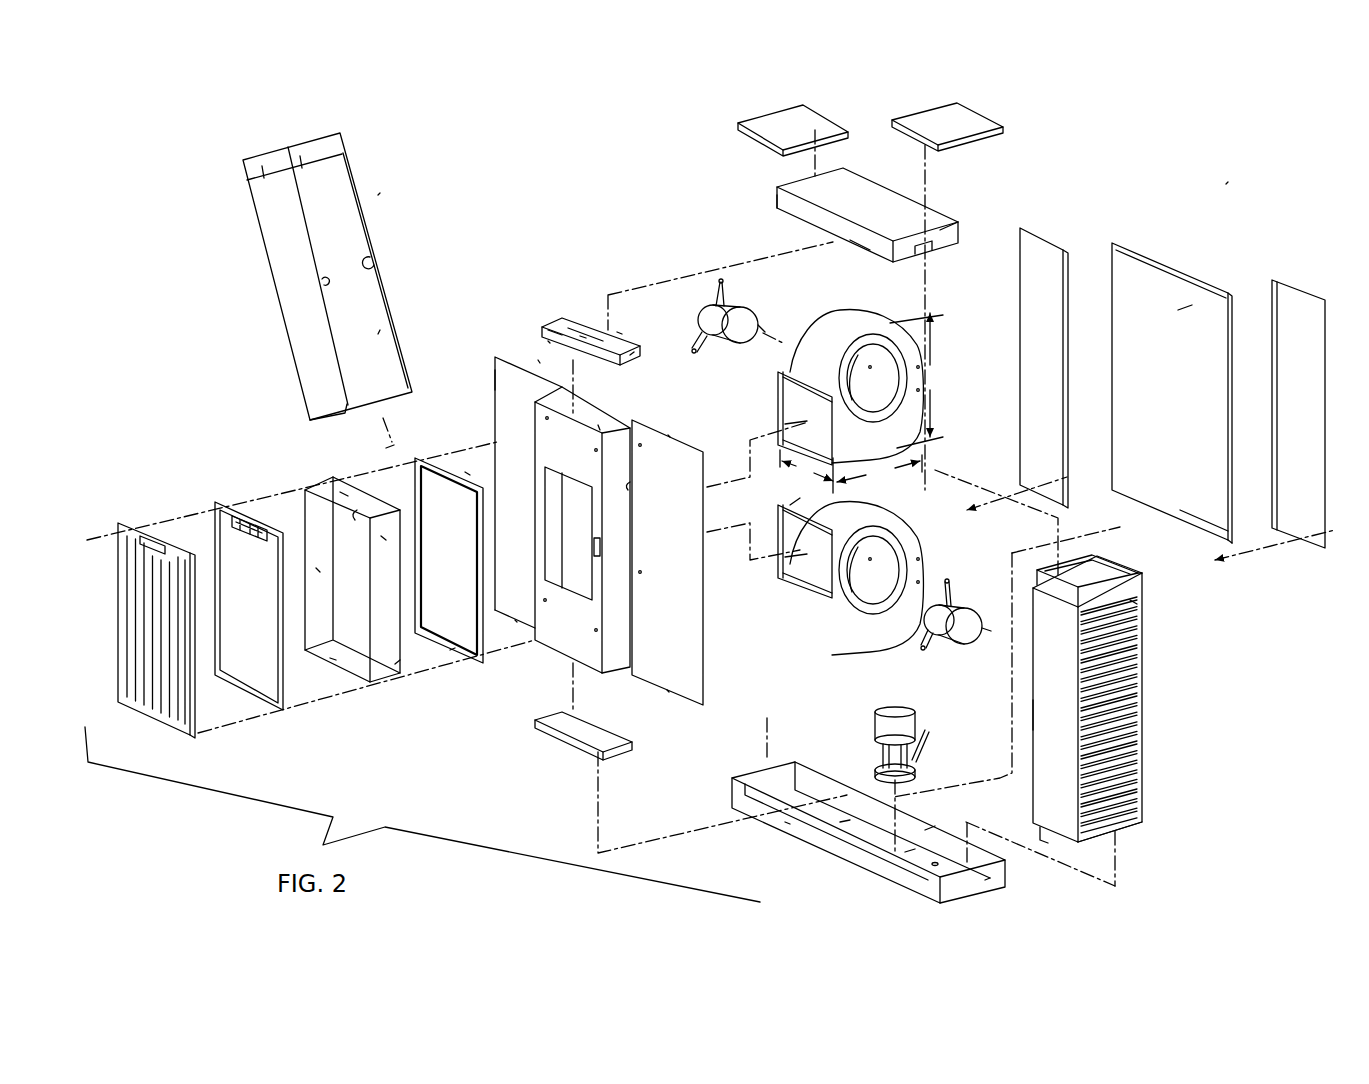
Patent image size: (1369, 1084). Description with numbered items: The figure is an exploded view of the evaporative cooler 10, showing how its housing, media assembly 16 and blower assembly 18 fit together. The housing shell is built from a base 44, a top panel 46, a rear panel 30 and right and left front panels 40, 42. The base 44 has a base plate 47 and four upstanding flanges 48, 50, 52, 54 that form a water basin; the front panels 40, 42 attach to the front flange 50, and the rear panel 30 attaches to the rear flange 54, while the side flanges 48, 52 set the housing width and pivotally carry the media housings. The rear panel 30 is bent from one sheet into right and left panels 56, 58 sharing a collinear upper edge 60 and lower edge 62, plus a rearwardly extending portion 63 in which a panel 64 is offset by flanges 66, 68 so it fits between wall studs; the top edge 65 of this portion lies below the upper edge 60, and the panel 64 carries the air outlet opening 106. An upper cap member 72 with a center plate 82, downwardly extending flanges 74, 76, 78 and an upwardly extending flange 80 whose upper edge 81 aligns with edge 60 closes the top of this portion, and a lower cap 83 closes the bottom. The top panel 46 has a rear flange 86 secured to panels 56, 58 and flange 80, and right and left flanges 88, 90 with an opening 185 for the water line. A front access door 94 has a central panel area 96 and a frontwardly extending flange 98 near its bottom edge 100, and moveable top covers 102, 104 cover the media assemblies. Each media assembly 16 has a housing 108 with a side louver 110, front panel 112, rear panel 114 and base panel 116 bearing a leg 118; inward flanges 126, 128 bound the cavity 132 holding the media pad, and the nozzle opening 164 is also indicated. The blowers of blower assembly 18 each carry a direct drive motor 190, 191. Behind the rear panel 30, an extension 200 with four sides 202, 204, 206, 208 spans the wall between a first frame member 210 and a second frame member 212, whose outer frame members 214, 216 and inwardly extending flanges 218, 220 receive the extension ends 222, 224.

The evaporative cooler 10 is at (380, 193).
The media assembly 16 is at (1093, 729).
The blower assembly 18 is at (922, 493).
The rear panel 30 is at (600, 515).
The right front panel 40 is at (1043, 236).
The left front panel 42 is at (1276, 392).
The base 44 is at (881, 809).
The top panel 46 is at (854, 192).
The base plate 47 is at (912, 855).
The upstanding flange 48 is at (785, 770).
The front upwards extending flange 50 is at (930, 826).
The upstanding flange 52 is at (985, 880).
The upwardly extending flange 54 is at (785, 822).
The right panel 56 is at (506, 474).
The left panel 58 is at (688, 555).
The upper edge 60 is at (538, 360).
The lower edge 62 is at (515, 620).
The rearwardly extending portion 63 is at (573, 531).
The panel 64 is at (574, 439).
The top edge 65 is at (598, 425).
The flange 66 is at (494, 380).
The flange 68 is at (628, 490).
The upper cap member 72 is at (555, 485).
The rear flange 74 is at (548, 341).
The right downwardly extending flange 76 is at (560, 330).
The left downwardly extending flange 78 is at (630, 355).
The upwardly extending flange 80 is at (617, 332).
The upper edge 81 is at (595, 320).
The center plate member 82 is at (572, 325).
The lower cap 83 is at (568, 755).
The rear flange 86 is at (861, 237).
The right flange 88 is at (777, 203).
The left flange 90 is at (955, 227).
The front access door 94 is at (1172, 391).
The central panel area 96 is at (1185, 307).
The frontwardly extending flange 98 is at (1235, 540).
The bottom edge 100 is at (1190, 525).
The moveable top cover 102 is at (738, 117).
The moveable top cover 104 is at (1012, 113).
The opening 106 is at (575, 595).
The housing 108 is at (1090, 729).
The side louver 110 is at (1139, 777).
The front panel 112 is at (1137, 606).
The rear panel 114 is at (1035, 715).
The base panel 116 is at (1126, 831).
The support or leg 118 is at (1043, 838).
The flange 126 is at (335, 259).
The flange 128 is at (322, 279).
The cavity 132 is at (379, 333).
The opening 164 is at (310, 143).
The opening 185 is at (933, 252).
The direct drive motor 190 is at (741, 294).
The direct drive motor 191 is at (957, 643).
The extension 200 is at (372, 587).
The side 202 is at (345, 492).
The side 204 is at (398, 665).
The side 206 is at (333, 658).
The side 208 is at (318, 570).
The first frame member 210 is at (452, 537).
The second frame member 212 is at (225, 505).
The outer frame member 214 is at (465, 472).
The outer frame member 216 is at (250, 584).
The inwardly extending flange 218 is at (450, 650).
The inwardly extending flange 220 is at (222, 642).
The end 222 is at (383, 538).
The end 224 is at (355, 520).